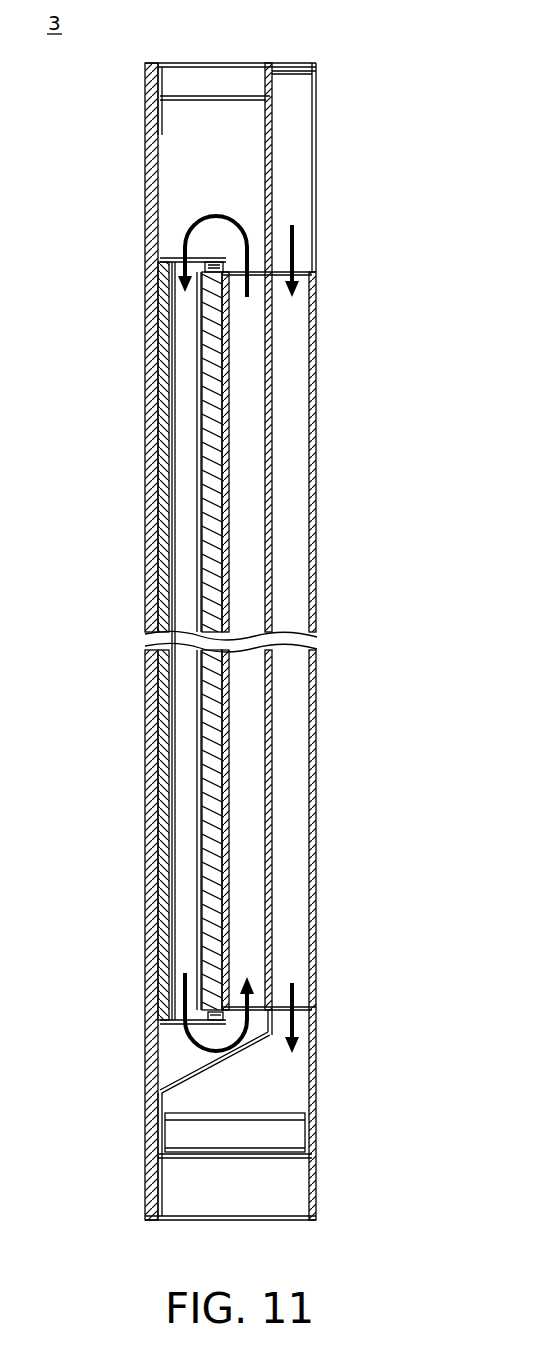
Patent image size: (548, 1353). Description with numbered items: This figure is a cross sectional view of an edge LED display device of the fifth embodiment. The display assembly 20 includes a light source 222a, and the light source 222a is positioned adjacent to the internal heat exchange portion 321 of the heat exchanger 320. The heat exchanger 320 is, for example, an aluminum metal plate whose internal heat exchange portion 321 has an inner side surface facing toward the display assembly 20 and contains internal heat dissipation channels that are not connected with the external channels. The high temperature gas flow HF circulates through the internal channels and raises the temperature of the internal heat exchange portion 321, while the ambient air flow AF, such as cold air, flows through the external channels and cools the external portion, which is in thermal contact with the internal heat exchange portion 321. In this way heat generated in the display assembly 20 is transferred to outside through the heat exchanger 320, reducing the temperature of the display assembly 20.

The display assembly 20 is at (178, 252).
The light source 222a is at (212, 276).
The heat exchanger 320 is at (326, 333).
The internal heat exchange portion 321 is at (228, 383).
The high temperature gas flow HF is at (216, 213).
The ambient air flow AF is at (293, 235).